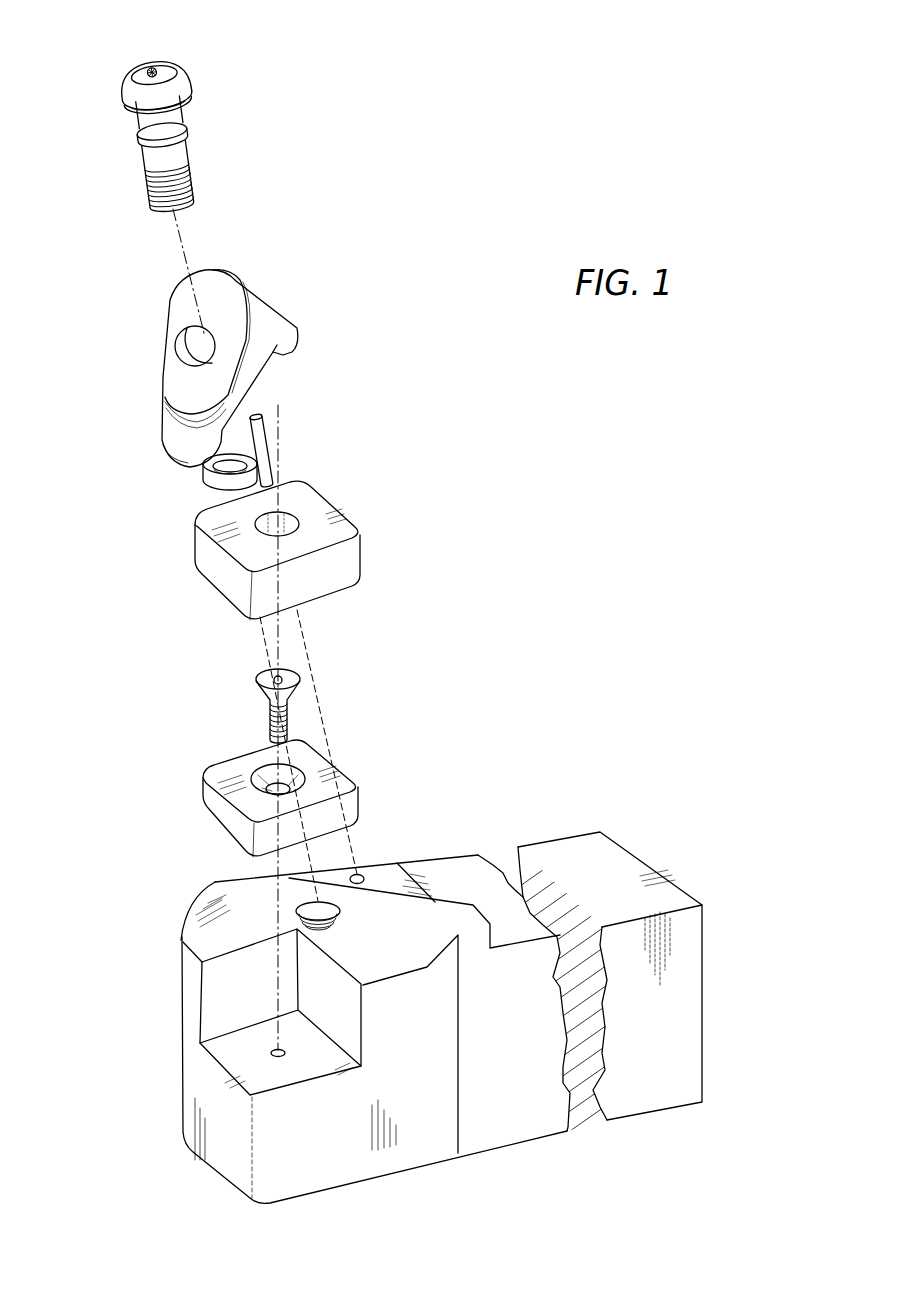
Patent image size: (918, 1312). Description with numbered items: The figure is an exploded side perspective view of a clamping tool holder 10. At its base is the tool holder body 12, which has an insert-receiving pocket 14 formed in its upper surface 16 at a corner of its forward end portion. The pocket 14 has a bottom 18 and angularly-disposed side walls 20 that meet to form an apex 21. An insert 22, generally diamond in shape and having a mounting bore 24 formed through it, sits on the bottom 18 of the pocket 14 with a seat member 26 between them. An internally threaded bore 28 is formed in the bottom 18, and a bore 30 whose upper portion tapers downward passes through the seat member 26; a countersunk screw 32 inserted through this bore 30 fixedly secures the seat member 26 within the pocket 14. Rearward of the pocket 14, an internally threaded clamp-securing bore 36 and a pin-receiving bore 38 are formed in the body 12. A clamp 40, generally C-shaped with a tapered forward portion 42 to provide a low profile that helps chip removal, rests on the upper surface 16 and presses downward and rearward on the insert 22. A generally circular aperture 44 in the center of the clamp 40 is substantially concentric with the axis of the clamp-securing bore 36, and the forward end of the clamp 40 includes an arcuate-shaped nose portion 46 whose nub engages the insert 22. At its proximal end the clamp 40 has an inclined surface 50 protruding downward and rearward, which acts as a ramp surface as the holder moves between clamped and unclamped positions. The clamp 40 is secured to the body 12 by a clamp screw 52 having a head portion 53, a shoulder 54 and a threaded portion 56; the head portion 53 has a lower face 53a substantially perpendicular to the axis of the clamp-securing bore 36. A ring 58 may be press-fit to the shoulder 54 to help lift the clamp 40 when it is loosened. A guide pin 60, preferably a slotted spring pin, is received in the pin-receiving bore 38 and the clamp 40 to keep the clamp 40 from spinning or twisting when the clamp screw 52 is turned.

The clamping tool holder 10 is at (577, 677).
The tool holder body 12 is at (587, 842).
The insert-receiving pocket 14 is at (310, 994).
The upper surface 16 is at (220, 893).
The bottom 18 is at (227, 1073).
The side walls 20 is at (217, 993).
The apex 21 is at (305, 921).
The insert 22 is at (322, 528).
The mounting bore 24 is at (290, 523).
The seat member 26 is at (253, 783).
The internally threaded bore 28 is at (285, 1052).
The bore 30 is at (290, 777).
The countersunk screw 32 is at (287, 717).
The clamp-securing bore 36 is at (331, 909).
The pin-receiving bore 38 is at (364, 875).
The clamp 40 is at (232, 346).
The tapered forward portion 42 is at (171, 368).
The aperture 44 is at (205, 332).
The arcuate-shaped nose portion 46 is at (161, 461).
The inclined surface 50 is at (283, 355).
The clamp screw 52 is at (166, 114).
The head portion 53 is at (183, 65).
The lower face 53a is at (130, 110).
The shoulder 54 is at (187, 128).
The threaded portion 56 is at (197, 193).
The ring 58 is at (205, 466).
The guide pin 60 is at (272, 447).